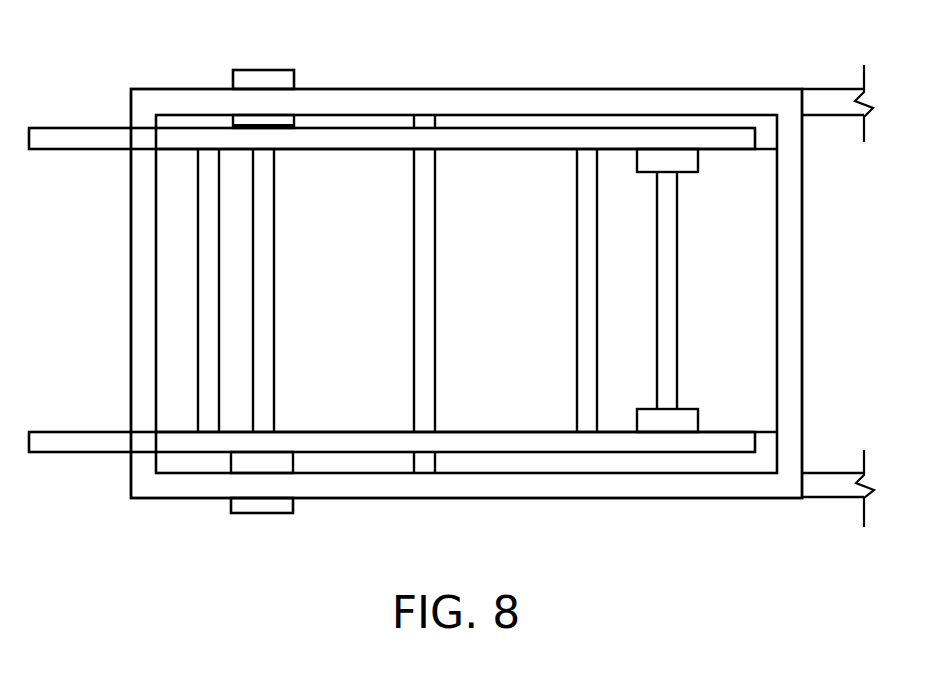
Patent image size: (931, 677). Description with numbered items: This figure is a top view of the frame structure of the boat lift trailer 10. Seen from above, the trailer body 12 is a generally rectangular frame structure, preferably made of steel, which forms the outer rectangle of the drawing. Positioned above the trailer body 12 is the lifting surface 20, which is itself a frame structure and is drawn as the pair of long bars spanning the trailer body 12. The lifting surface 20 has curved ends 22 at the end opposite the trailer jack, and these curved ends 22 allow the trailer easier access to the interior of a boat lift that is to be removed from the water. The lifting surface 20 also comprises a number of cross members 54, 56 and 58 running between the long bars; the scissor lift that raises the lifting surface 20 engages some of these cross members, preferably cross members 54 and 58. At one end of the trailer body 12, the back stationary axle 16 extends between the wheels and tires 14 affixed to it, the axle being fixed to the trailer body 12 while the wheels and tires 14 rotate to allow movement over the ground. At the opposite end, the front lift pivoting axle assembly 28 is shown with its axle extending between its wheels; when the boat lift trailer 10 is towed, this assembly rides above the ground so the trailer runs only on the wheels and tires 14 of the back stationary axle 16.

The boat lift trailer 10 is at (565, 58).
The trailer body 12 is at (364, 89).
The wheels and tires 14 is at (262, 70).
The back stationary axle 16 is at (275, 256).
The lifting surface 20 is at (491, 150).
The curved ends 22 is at (76, 128).
The front lift pivoting axle assembly 28 is at (692, 173).
The cross member 54 is at (199, 222).
The cross member 56 is at (436, 247).
The cross member 58 is at (577, 270).